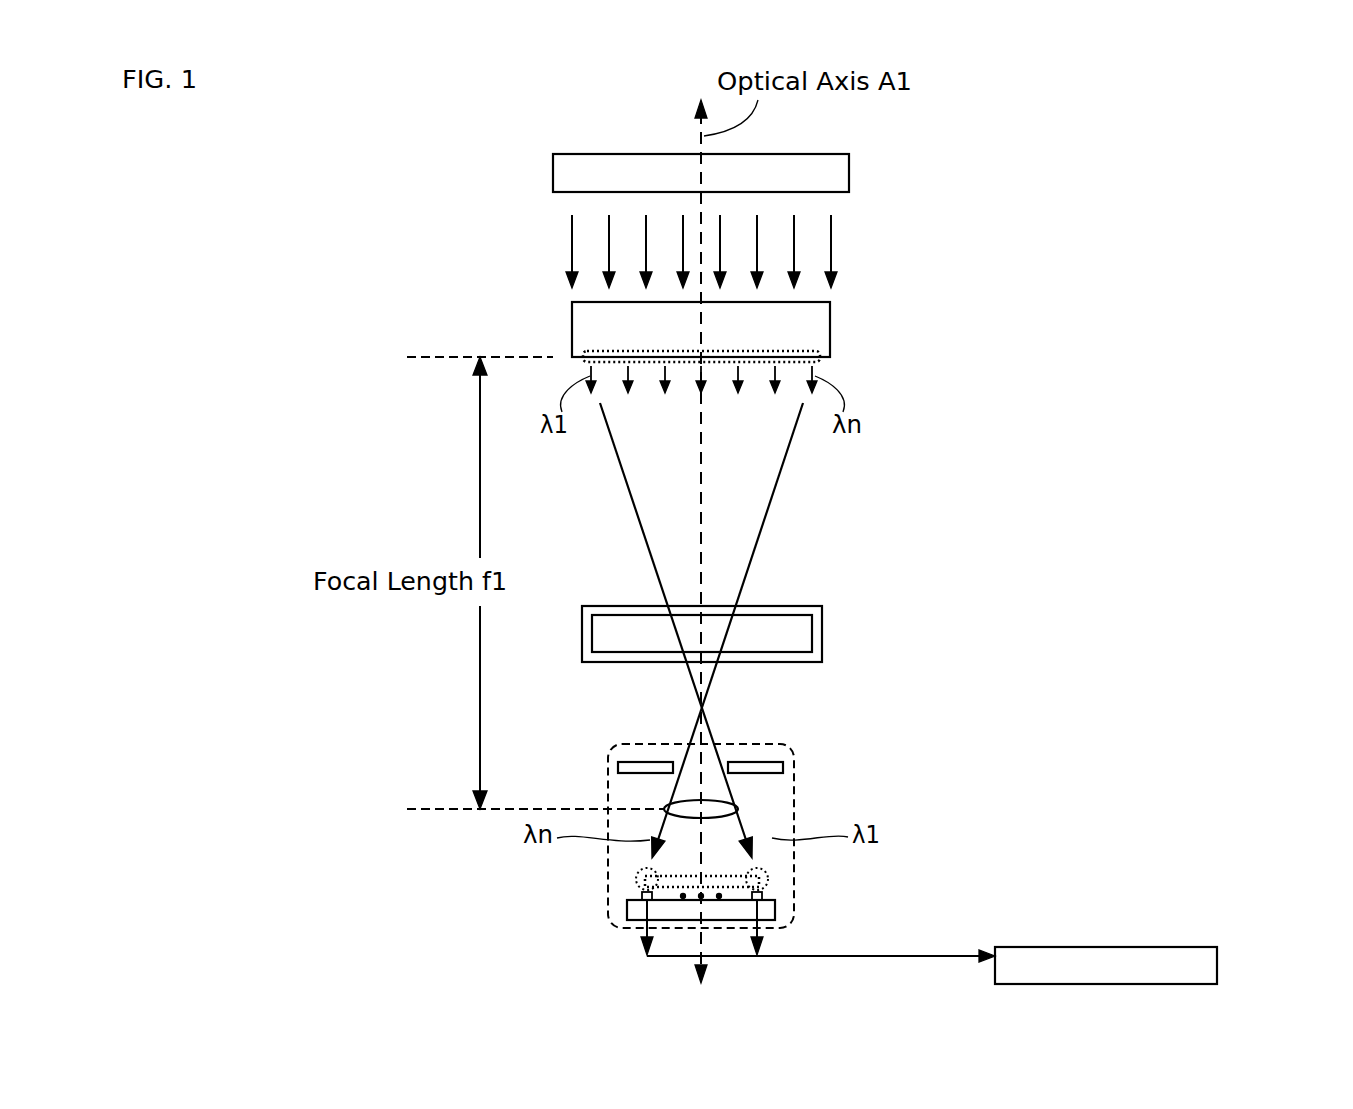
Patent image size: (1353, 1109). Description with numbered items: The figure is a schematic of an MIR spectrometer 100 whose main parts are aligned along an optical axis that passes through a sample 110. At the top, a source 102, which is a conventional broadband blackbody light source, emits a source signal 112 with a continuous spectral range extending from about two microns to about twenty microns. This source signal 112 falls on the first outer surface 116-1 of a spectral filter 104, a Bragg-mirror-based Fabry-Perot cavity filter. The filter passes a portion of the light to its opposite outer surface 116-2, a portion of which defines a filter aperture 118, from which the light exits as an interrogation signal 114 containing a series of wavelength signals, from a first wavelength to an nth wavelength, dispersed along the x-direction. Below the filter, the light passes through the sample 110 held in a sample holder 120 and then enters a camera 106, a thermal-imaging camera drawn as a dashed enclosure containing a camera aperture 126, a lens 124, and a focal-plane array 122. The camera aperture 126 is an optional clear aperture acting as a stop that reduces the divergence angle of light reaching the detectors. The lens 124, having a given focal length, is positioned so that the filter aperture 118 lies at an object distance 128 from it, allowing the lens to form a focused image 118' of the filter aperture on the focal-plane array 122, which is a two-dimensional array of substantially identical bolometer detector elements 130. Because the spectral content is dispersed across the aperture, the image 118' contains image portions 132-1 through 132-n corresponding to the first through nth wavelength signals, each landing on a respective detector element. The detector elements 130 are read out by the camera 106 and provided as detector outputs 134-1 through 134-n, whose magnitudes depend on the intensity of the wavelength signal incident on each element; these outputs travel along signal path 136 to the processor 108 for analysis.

The spectrometer 100 is at (394, 151).
The source 102 is at (849, 173).
The spectral filter 104 is at (832, 310).
The camera 106 is at (608, 780).
The processor 108 is at (1106, 965).
The sample 110 is at (702, 633).
The source signal 112 is at (521, 242).
The interrogation signal 114 is at (852, 375).
The outer surface 116-1 is at (586, 288).
The outer surface 116-2 is at (581, 342).
The filter aperture 118 is at (873, 333).
The image 118' is at (578, 895).
The sample holder 120 is at (893, 612).
The focal-plane array (FPA) 122 is at (627, 910).
The lens 124 is at (739, 809).
The camera aperture 126 is at (757, 761).
The object distance 128 is at (447, 360).
The detector elements 130 is at (764, 892).
The image portion 132-1 is at (768, 879).
The image portion 132-n is at (636, 879).
The detector output 134-1 is at (765, 934).
The detector output 134-n is at (645, 930).
The output signal to processor 136 is at (922, 956).